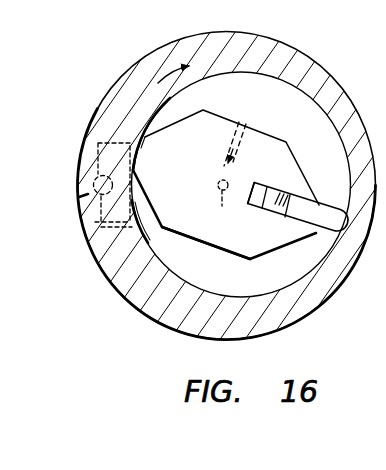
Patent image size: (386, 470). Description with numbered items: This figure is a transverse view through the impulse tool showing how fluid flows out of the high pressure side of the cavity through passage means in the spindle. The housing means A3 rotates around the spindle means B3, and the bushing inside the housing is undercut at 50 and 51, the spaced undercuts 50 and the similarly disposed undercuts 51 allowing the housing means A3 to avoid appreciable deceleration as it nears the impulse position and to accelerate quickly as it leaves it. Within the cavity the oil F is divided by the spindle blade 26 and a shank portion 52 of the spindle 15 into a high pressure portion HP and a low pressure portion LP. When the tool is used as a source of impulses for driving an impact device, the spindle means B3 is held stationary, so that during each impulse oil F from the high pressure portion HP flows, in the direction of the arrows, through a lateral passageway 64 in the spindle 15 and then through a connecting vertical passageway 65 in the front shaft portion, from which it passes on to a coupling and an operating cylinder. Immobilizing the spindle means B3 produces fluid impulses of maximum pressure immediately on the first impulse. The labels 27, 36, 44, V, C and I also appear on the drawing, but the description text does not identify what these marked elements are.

The spindle 15 is at (197, 233).
The spindle blade 26 is at (332, 217).
The piston end face 27 is at (257, 199).
The passage 36 is at (101, 163).
The conduit 44 is at (99, 227).
The undercut 50 is at (152, 121).
The undercut 51 is at (143, 232).
The shank portion 52 is at (146, 139).
The lateral passageway 64 is at (228, 182).
The connecting vertical passageway 65 is at (219, 210).
The valve V is at (103, 186).
The conduit C is at (94, 189).
The high pressure portion HP is at (247, 120).
The low pressure portion LP is at (264, 277).
The spindle means B3 is at (287, 137).
The housing means A3 is at (324, 64).
The inlet I is at (343, 112).
The oil F is at (338, 155).